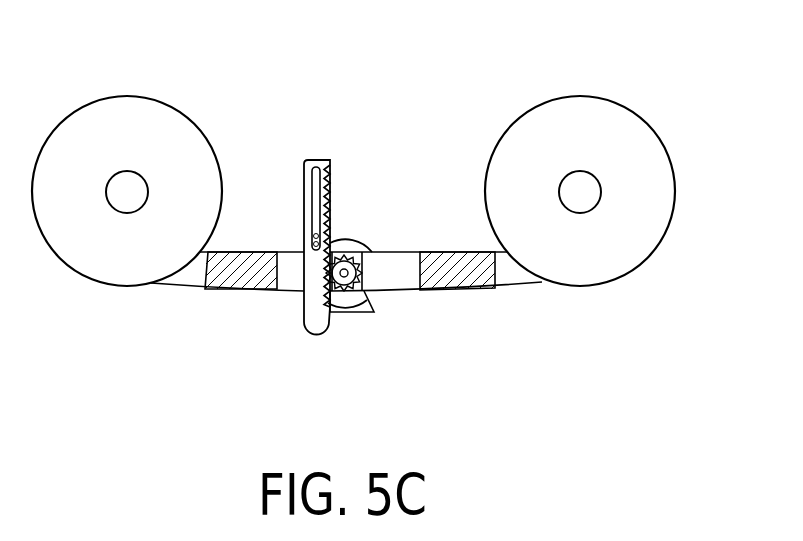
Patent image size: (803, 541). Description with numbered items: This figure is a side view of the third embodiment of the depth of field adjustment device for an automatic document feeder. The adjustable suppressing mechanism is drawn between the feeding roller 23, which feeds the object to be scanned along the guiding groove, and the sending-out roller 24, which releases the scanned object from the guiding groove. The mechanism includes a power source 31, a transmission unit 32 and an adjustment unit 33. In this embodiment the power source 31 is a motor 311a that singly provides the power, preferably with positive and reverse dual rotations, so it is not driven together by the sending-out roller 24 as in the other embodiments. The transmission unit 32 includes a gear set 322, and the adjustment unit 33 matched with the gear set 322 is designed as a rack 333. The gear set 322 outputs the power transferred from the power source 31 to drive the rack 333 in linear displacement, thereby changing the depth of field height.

The feeding roller 23 is at (120, 118).
The sending-out roller 24 is at (568, 118).
The power source 31 is at (380, 303).
The motor 311a is at (340, 240).
The transmission unit 32 is at (362, 229).
The gear set 322 is at (388, 257).
The adjustment unit 33 is at (332, 257).
The rack 333 is at (313, 315).